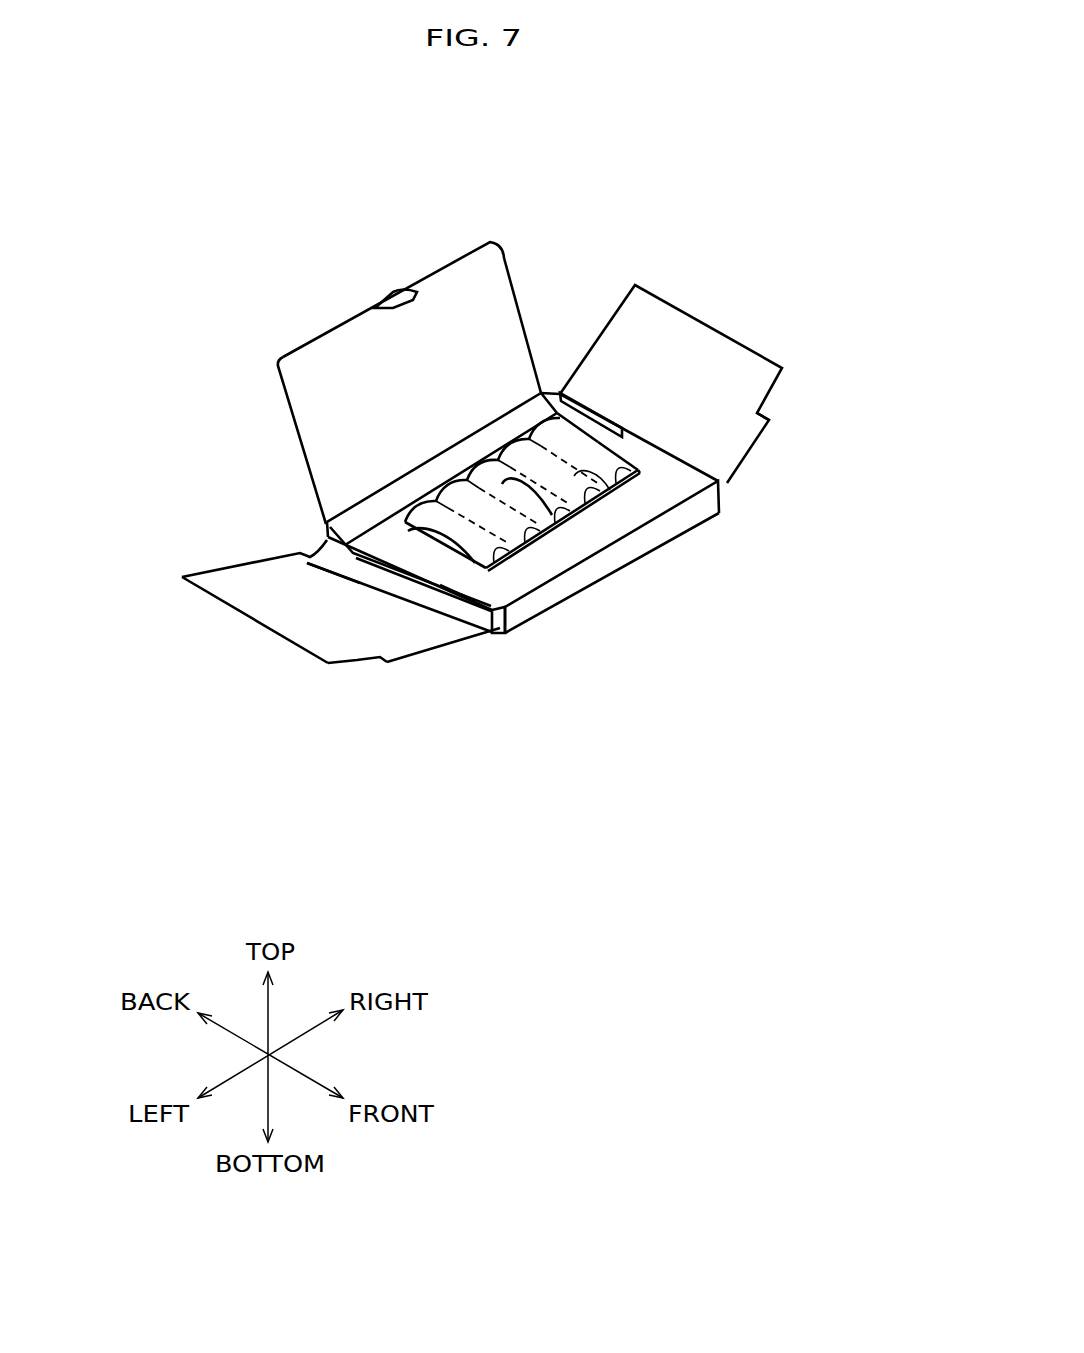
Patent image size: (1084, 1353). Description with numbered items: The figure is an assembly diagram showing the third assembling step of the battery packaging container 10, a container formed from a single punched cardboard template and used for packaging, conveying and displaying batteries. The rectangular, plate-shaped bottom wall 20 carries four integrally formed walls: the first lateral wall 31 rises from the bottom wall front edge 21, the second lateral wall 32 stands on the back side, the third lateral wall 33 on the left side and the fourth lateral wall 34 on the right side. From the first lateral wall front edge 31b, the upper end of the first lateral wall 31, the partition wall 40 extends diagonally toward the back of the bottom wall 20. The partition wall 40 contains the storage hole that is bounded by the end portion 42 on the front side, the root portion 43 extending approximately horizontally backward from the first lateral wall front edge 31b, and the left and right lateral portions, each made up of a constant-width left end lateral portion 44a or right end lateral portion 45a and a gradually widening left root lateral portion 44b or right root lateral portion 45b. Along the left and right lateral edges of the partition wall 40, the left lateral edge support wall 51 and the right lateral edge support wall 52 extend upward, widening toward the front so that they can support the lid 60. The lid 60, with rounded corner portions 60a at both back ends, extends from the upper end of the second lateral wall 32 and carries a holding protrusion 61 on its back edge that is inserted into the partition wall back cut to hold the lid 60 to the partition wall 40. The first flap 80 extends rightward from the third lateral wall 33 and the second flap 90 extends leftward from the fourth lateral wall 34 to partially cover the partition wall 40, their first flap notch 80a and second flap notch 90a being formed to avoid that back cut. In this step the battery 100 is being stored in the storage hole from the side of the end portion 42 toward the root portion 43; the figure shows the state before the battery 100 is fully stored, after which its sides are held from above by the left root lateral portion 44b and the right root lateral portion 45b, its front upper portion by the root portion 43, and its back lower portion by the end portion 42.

The battery packaging container 10 is at (281, 171).
The bottom wall 20 is at (462, 607).
The bottom wall front edge 21 is at (688, 524).
The first lateral wall 31 is at (558, 594).
The first lateral wall front edge 31b is at (508, 604).
The second lateral wall 32 is at (560, 400).
The third lateral wall 33 is at (467, 633).
The fourth lateral wall 34 is at (720, 487).
The partition wall 40 is at (690, 488).
The end portion 42 is at (410, 507).
The root portion 43 is at (566, 534).
The left end lateral portion 44a is at (343, 577).
The left root lateral portion 44b is at (457, 567).
The right end lateral portion 45a is at (600, 425).
The right root lateral portion 45b is at (640, 470).
The left lateral edge support wall 51 is at (312, 563).
The right lateral edge support wall 52 is at (567, 397).
The lid 60 is at (337, 381).
The corner portions 60a is at (490, 242).
The holding protrusion 61 is at (405, 297).
The first flap 80 is at (262, 594).
The first flap notch 80a is at (357, 663).
The second flap 90 is at (660, 328).
The second flap notch 90a is at (772, 388).
The battery 100 is at (590, 445).